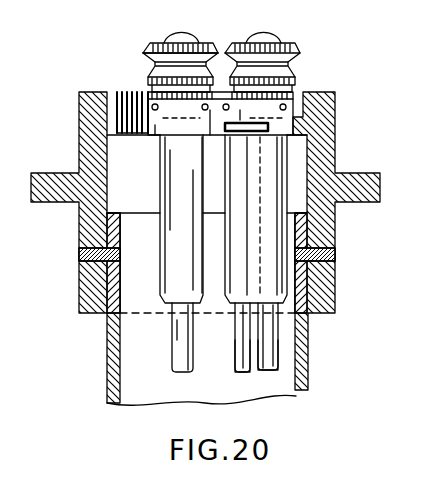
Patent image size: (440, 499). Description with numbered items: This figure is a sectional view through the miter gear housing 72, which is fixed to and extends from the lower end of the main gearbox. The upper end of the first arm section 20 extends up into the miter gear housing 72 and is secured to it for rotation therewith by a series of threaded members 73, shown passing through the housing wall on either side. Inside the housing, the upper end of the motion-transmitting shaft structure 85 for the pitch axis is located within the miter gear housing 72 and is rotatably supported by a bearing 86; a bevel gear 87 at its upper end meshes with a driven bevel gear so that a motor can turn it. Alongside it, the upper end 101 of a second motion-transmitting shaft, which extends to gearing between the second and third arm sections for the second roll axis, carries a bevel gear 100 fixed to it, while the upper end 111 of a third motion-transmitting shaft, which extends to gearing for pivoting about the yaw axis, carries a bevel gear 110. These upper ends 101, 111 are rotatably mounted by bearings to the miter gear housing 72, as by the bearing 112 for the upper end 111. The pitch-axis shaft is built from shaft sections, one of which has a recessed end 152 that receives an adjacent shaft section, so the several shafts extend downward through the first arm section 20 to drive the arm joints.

The first arm section 20 is at (310, 342).
The miter gear housing 72 is at (325, 228).
The threaded members 73 is at (82, 257).
The motion-transmitting shaft structure 85 is at (277, 172).
The bearing 86 is at (295, 115).
The bevel gear 87 is at (297, 50).
The bevel gear 100 is at (223, 55).
The upper end of motion-transmitting shaft 101 is at (245, 365).
The bevel gear 110 is at (157, 45).
The upper end of motion-transmitting shaft 111 is at (174, 341).
The bearing 112 is at (147, 90).
The recessed end 152 is at (272, 360).